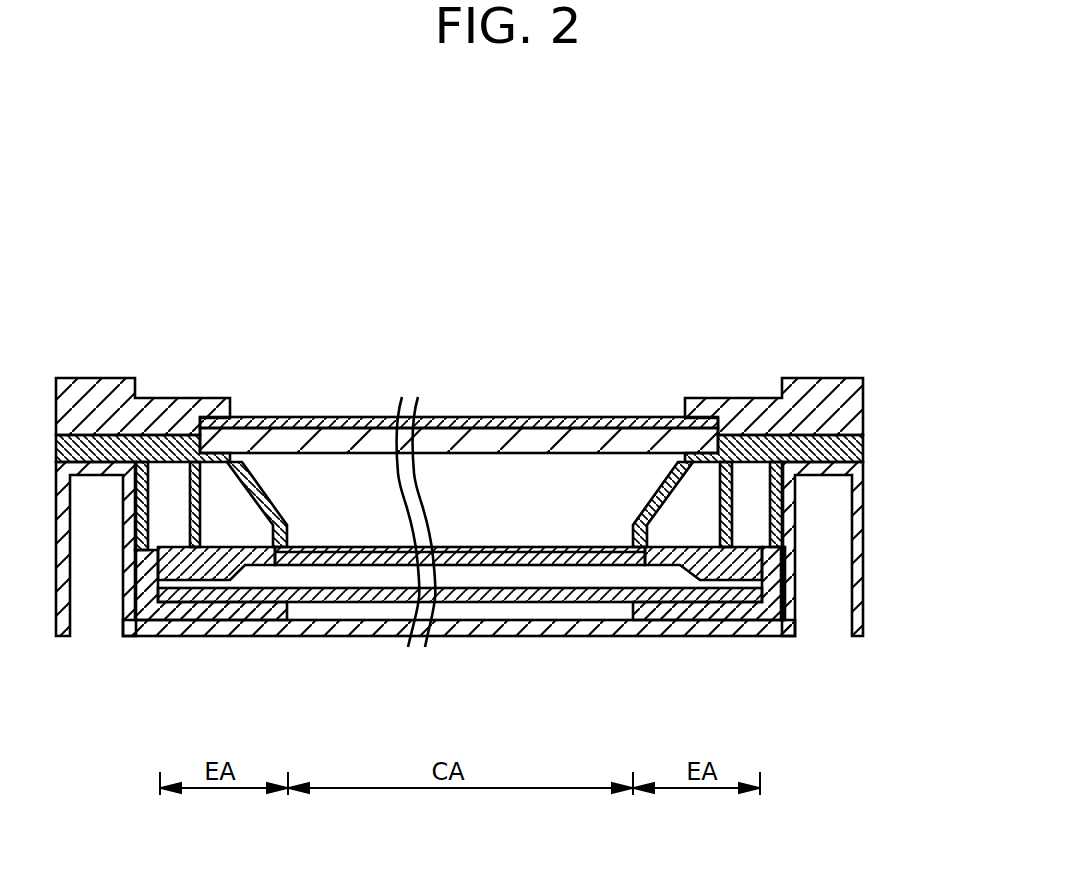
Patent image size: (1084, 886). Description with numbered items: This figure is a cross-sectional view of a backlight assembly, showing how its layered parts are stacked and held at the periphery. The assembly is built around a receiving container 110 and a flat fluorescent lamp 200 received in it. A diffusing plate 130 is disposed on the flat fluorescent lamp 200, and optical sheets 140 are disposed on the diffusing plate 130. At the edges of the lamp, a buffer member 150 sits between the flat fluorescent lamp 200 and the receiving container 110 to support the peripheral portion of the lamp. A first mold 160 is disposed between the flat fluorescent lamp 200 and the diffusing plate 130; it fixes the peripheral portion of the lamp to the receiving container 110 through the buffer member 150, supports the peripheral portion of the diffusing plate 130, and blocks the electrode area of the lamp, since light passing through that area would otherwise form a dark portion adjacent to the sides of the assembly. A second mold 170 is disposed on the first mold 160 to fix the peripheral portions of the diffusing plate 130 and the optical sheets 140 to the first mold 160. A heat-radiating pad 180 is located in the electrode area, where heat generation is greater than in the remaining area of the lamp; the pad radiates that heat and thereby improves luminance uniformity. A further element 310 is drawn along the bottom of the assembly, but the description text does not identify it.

The receiving container 110 is at (863, 562).
The diffusing plate 130 is at (595, 442).
The optical sheets 140 is at (500, 427).
The buffer member 150 is at (750, 613).
The first mold 160 is at (864, 448).
The second mold 170 is at (864, 402).
The heat-radiating pad 180 is at (797, 573).
The flat fluorescent lamp 200 is at (612, 602).
The bottom cover 310 is at (482, 636).